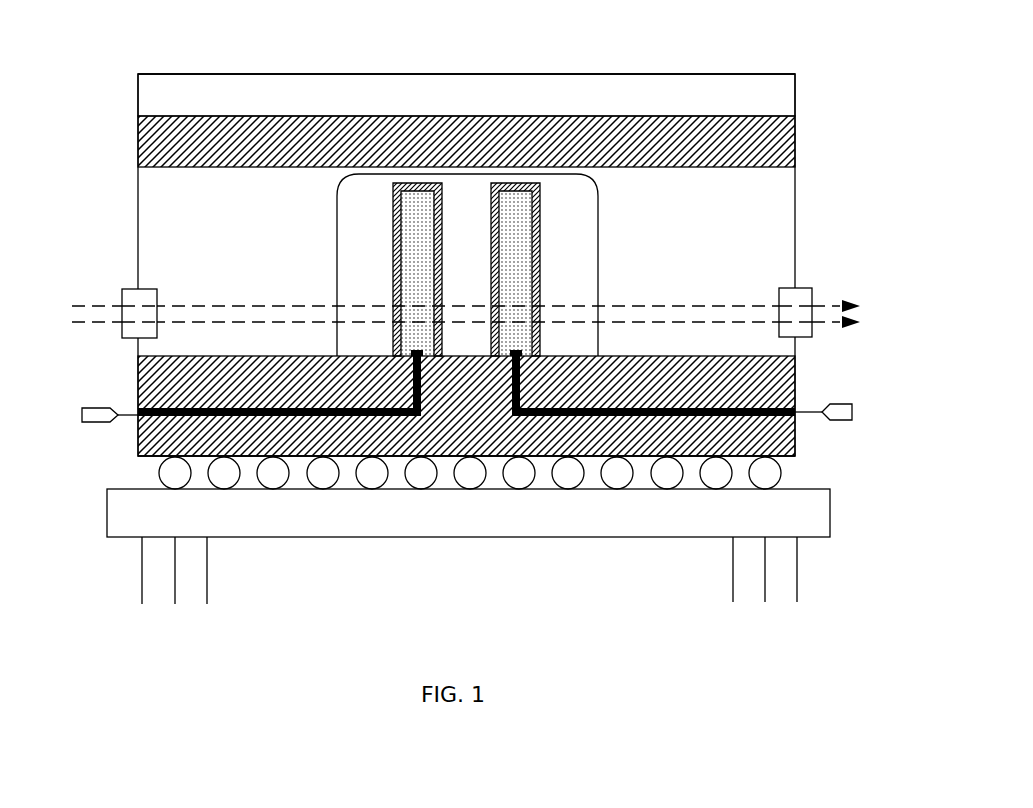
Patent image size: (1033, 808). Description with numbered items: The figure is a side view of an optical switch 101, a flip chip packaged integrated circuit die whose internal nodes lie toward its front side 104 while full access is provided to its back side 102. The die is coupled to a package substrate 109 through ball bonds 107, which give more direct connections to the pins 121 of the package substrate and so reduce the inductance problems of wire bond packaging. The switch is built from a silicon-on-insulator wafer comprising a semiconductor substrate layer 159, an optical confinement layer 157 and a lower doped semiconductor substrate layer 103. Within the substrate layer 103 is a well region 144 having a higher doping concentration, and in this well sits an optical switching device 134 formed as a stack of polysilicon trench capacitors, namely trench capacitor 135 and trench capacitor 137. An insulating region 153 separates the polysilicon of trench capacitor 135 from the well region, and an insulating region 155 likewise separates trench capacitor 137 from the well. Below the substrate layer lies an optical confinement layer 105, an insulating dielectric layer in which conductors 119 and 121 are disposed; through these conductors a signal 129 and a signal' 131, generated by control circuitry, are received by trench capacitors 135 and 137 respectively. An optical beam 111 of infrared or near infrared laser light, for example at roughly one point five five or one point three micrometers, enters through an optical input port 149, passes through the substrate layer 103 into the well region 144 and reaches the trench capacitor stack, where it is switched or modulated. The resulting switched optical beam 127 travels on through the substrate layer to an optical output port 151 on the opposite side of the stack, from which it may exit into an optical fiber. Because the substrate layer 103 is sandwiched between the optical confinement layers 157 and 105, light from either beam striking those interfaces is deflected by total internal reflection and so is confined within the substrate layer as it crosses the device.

The optical switch 101 is at (827, 48).
The back side 102 is at (730, 73).
The semiconductor substrate layer 103 is at (786, 205).
The front side 104 is at (797, 458).
The optical confinement layer 105 is at (797, 395).
The ball bonds 107 is at (517, 489).
The package substrate 109 is at (830, 512).
The optical beam 111 is at (67, 295).
The conductor 119 is at (412, 373).
The conductor / pins 121 is at (523, 373).
The switched optical beam 127 is at (865, 290).
The signal 129 is at (50, 405).
The signal' 131 is at (878, 405).
The optical switching device 134 is at (572, 211).
The trench capacitor 135 is at (418, 290).
The trench capacitor 137 is at (515, 290).
The well region 144 is at (598, 255).
The optical input port 149 is at (128, 290).
The optical output port 151 is at (797, 288).
The insulating region 153 is at (442, 247).
The insulating region 155 is at (540, 247).
The optical confinement layer 157 is at (786, 143).
The semiconductor substrate layer 159 is at (786, 102).